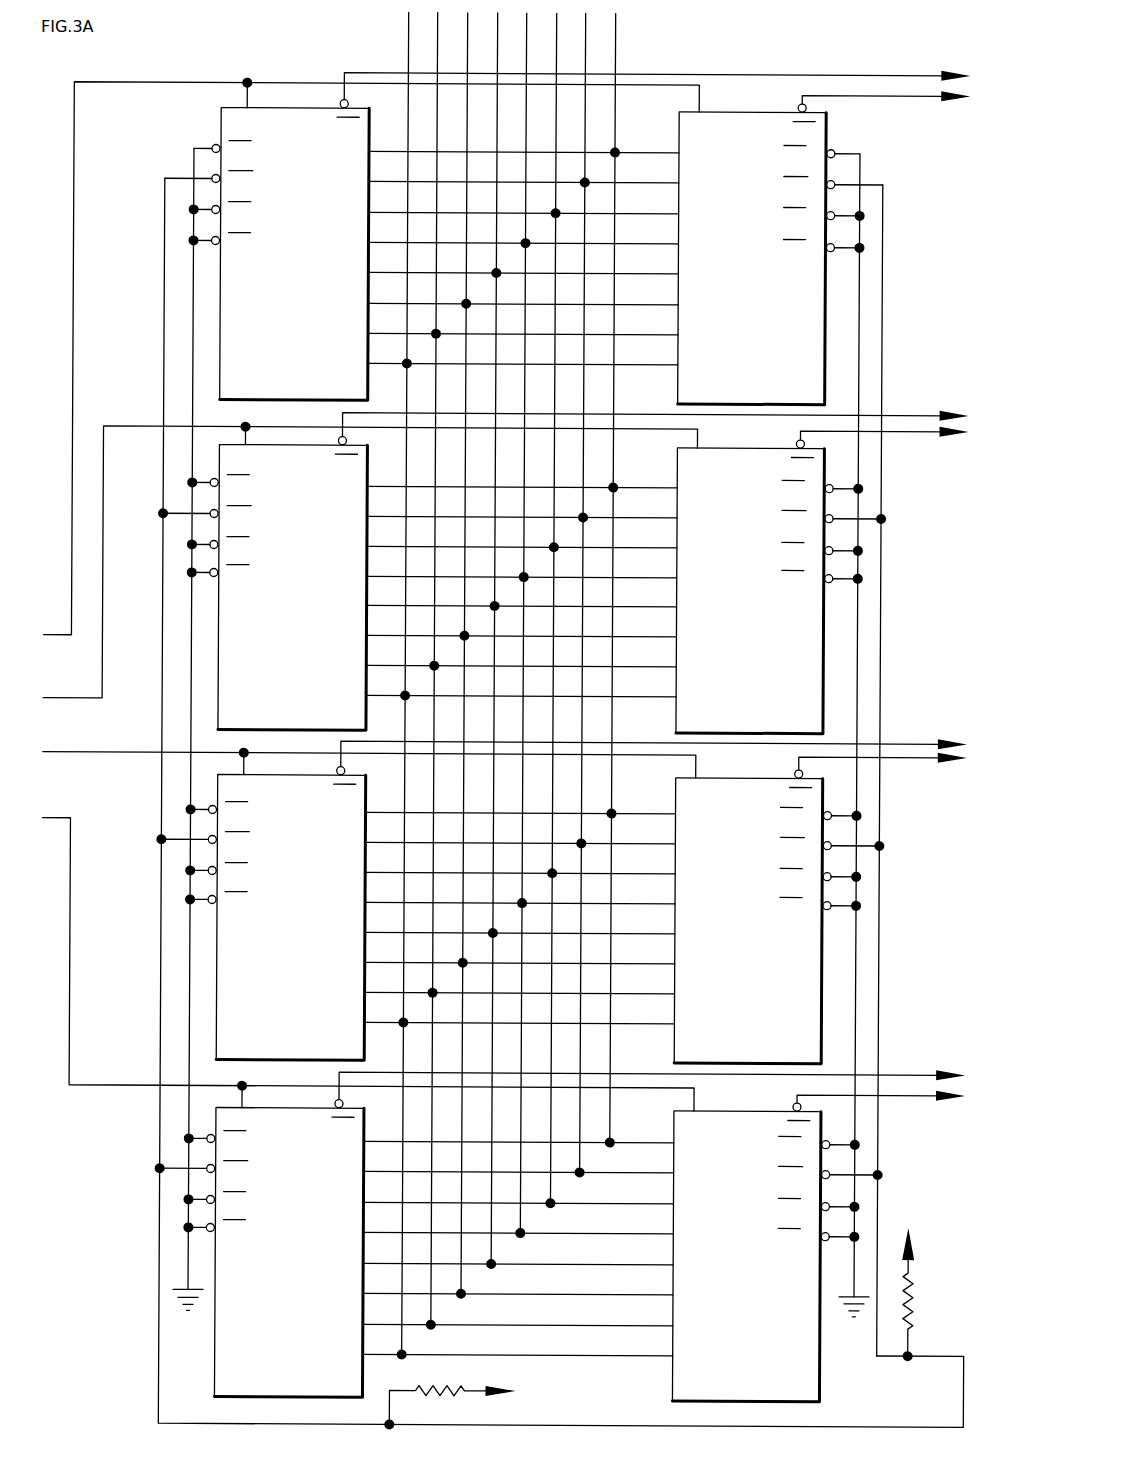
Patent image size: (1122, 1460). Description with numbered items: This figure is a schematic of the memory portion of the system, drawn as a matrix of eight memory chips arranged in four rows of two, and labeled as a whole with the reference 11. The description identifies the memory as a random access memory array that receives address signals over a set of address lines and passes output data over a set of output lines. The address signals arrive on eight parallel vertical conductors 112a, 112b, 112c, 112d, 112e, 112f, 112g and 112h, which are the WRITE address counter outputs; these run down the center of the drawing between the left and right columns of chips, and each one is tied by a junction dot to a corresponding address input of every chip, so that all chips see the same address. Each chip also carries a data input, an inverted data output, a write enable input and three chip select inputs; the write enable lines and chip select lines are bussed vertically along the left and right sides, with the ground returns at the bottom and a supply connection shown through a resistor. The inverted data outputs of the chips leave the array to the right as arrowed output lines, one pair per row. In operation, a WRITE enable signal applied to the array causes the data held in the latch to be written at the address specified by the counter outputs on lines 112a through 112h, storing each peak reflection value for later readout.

The memory array circuit 11 is at (256, 45).
The address line 112a is at (403, 26).
The address line 112b is at (432, 26).
The address line 112c is at (462, 26).
The address line 112d is at (492, 26).
The address line 112e is at (521, 26).
The address line 112f is at (551, 26).
The address line 112g is at (580, 26).
The address line 112h is at (610, 26).